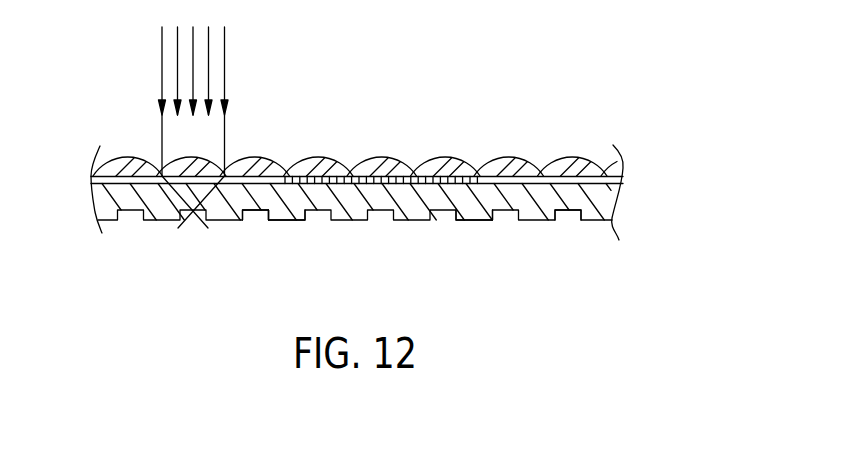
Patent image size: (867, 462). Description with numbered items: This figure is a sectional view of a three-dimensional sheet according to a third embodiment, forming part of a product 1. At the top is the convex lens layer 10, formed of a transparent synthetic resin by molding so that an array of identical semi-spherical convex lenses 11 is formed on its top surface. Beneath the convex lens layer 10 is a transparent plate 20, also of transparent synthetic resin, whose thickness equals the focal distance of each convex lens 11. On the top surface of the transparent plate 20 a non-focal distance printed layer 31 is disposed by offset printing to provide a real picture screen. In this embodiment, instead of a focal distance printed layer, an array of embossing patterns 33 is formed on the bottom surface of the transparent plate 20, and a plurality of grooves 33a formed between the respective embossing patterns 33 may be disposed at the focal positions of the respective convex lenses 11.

The product 1 is at (607, 108).
The convex lens layer 10 is at (122, 147).
The convex lens 11 is at (443, 168).
The transparent plate 20 is at (107, 202).
The non-focal distance printed layer 31 is at (382, 177).
The embossing pattern 33 is at (292, 218).
The groove 33a is at (253, 220).